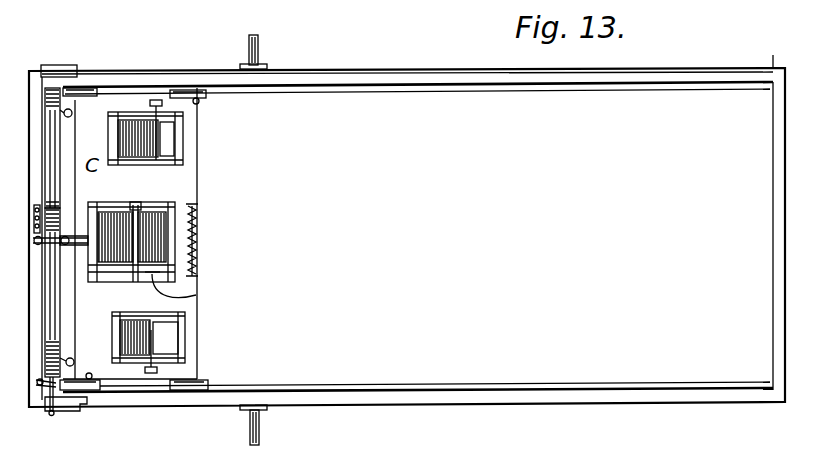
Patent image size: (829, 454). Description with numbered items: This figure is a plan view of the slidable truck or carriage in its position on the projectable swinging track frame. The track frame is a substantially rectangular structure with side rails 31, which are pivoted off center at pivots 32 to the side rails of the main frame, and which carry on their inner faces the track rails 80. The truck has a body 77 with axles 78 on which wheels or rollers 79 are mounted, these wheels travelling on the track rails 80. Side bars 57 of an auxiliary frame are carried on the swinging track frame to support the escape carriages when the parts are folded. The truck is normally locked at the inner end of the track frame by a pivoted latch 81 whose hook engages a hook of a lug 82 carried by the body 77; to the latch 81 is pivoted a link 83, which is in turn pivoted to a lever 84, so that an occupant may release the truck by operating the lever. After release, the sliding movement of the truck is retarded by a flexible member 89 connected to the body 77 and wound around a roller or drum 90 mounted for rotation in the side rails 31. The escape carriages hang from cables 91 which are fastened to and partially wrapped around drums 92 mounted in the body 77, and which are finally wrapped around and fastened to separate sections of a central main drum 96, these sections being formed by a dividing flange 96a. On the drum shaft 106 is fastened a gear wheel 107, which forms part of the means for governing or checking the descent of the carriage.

The rails 31 is at (756, 66).
The pivot 32 is at (260, 54).
The side bars 57 is at (55, 70).
The body 77 is at (197, 295).
The axles 78 is at (199, 101).
The wheels 79 is at (185, 90).
The track rails 80 is at (735, 86).
The pivoted latch 81 is at (65, 236).
The lug 82 is at (80, 244).
The link 83 is at (42, 310).
The lever 84 is at (42, 377).
The flexible member 89 is at (72, 113).
The roller 90 is at (44, 155).
The cables 91 is at (149, 101).
The drums 92 is at (166, 140).
The main drum 96 is at (172, 272).
The dividing flange 96a is at (140, 210).
The drum shaft 106 is at (197, 230).
The gear wheel 107 is at (198, 248).